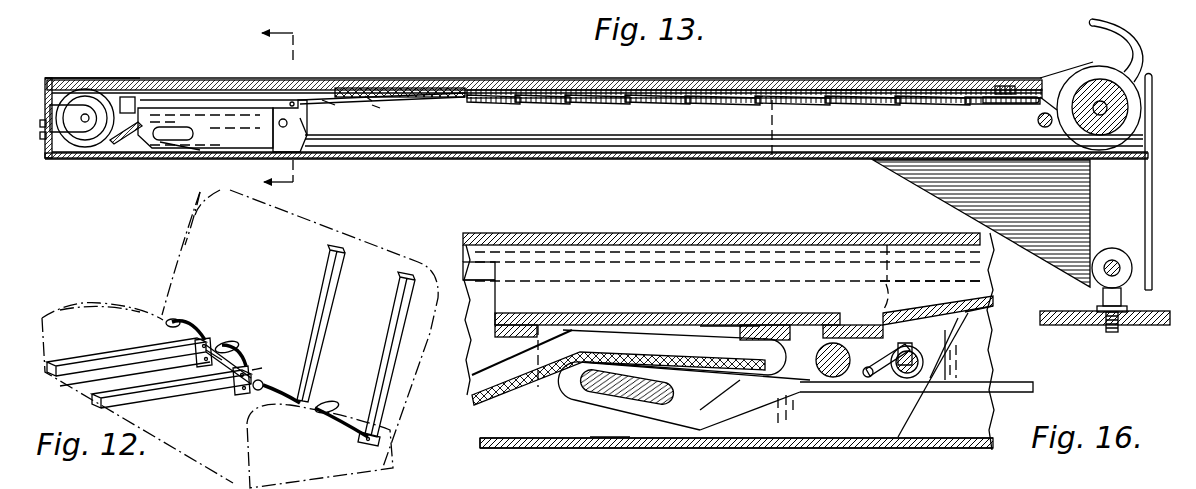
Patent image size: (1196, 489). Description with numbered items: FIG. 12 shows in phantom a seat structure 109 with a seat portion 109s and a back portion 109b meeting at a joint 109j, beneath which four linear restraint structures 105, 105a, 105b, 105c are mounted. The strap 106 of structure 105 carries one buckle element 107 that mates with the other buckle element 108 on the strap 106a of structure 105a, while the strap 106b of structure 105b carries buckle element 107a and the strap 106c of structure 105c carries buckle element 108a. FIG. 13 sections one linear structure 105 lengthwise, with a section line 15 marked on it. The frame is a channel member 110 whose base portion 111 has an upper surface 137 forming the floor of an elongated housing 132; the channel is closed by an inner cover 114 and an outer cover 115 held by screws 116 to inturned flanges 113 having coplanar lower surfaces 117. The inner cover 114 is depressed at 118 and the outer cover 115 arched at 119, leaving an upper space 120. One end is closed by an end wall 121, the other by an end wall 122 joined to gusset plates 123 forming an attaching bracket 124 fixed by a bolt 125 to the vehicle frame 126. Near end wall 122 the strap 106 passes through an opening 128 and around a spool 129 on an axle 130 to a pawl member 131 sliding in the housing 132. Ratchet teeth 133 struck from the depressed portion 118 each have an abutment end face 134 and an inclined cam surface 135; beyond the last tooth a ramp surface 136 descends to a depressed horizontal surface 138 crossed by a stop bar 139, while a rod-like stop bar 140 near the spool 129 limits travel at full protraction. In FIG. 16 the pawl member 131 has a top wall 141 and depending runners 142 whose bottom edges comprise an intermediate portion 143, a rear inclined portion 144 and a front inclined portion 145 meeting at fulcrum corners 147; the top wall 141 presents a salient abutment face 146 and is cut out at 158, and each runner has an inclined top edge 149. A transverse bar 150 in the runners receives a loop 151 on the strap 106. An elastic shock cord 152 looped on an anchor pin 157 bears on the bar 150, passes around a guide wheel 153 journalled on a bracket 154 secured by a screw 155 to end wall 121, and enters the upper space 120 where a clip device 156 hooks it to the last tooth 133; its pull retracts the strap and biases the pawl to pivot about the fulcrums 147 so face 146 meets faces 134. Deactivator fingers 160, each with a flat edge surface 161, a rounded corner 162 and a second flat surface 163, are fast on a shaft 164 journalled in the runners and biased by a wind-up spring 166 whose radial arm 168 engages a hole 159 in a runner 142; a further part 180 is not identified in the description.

In FIG. 13, the section line 15- 15 is at (292, 108).
In FIG. 13, the linear structure 105 is at (450, 68).
In FIG. 12, the linear structure 105 is at (48, 380).
In FIG. 16, the linear structure 105 is at (1033, 392).
In FIG. 12, the linear structure 105a is at (109, 406).
In FIG. 12, the linear structure 105b is at (316, 283).
In FIG. 12, the linear structure 105c is at (396, 291).
In FIG. 13, the restraining element 106 is at (1100, 30).
In FIG. 12, the restraining element 106 is at (190, 320).
In FIG. 12, the second strap 106a is at (248, 358).
In FIG. 12, the strap 106b is at (266, 393).
In FIG. 12, the strap 106c is at (345, 412).
In FIG. 12, the buckle element 107 is at (160, 327).
In FIG. 12, the buckle element 107a is at (250, 396).
In FIG. 12, the buckle element 108 is at (234, 342).
In FIG. 12, the buckle element 108a is at (329, 400).
In FIG. 12, the seat structure 109 is at (157, 277).
In FIG. 12, the back portion 109b is at (172, 246).
In FIG. 12, the seat portion 109s is at (86, 305).
In FIG. 12, the joint 109j is at (258, 368).
In FIG. 13, the channel member 110 is at (459, 161).
In FIG. 16, the channel member 110 is at (565, 449).
In FIG. 13, the base portion 111 is at (530, 158).
In FIG. 16, the base portion 111 is at (500, 449).
In FIG. 13, the horizontal flange 113 is at (330, 105).
In FIG. 16, the horizontal flange 113 is at (482, 283).
In FIG. 13, the inner cover 114 is at (365, 92).
In FIG. 16, the inner cover 114 is at (462, 263).
In FIG. 13, the outer cover 115 is at (397, 92).
In FIG. 13, the screws 116 is at (62, 78).
In FIG. 13, the lower surfaces 117 is at (369, 101).
In FIG. 16, the lower surfaces 117 is at (466, 286).
In FIG. 16, the depressed portion 118 is at (700, 313).
In FIG. 13, the arched portion 119 is at (780, 78).
In FIG. 16, the arched portion 119 is at (796, 233).
In FIG. 13, the upper space 120 is at (833, 80).
In FIG. 13, the end wall 121 is at (47, 96).
In FIG. 13, the second end wall 122 is at (1153, 126).
In FIG. 13, the gusset plates 123 is at (945, 196).
In FIG. 13, the attaching bracket 124 is at (1154, 264).
In FIG. 12, the attaching bracket 124 is at (226, 394).
In FIG. 13, the bolt 125 is at (1112, 248).
In FIG. 13, the vehicle frame 126 is at (1082, 325).
In FIG. 13, the opening 128 is at (1048, 75).
In FIG. 13, the spool 129 is at (1087, 75).
In FIG. 13, the transverse axle 130 is at (1101, 116).
In FIG. 13, the pawl member 131 is at (307, 127).
In FIG. 16, the pawl member 131 is at (962, 358).
In FIG. 13, the elongated housing 132 is at (595, 158).
In FIG. 16, the elongated housing 132 is at (993, 430).
In FIG. 13, the ratchet teeth 133 is at (432, 100).
In FIG. 13, the abutment end face 134 is at (556, 105).
In FIG. 13, the cam surface 135 is at (632, 104).
In FIG. 13, the ramp surface 136 is at (372, 110).
In FIG. 16, the ramp surface 136 is at (993, 318).
In FIG. 13, the floor 137 is at (150, 148).
In FIG. 16, the floor 137 is at (605, 440).
In FIG. 13, the depressed horizontal surface 138 is at (208, 108).
In FIG. 16, the depressed horizontal surface 138 is at (725, 325).
In FIG. 13, the stop bar 139 is at (130, 96).
In FIG. 16, the stop bar 139 is at (500, 338).
In FIG. 13, the stop bar 140 is at (1038, 121).
In FIG. 16, the top wall portion 141 is at (765, 325).
In FIG. 16, the vertical flanges 142 is at (556, 396).
In FIG. 16, the intermediate bottom edge portion 143 is at (795, 441).
In FIG. 16, the rear bottom edge portion 144 is at (572, 406).
In FIG. 16, the front bottom edge portion 145 is at (920, 422).
In FIG. 16, the abutment face 146 is at (916, 313).
In FIG. 16, the fulcrum corners 147 is at (714, 396).
In FIG. 16, the inclined top edge 149 is at (958, 354).
In FIG. 13, the transverse bar 150 is at (183, 141).
In FIG. 16, the transverse bar 150 is at (672, 389).
In FIG. 13, the loop 151 is at (172, 152).
In FIG. 16, the loop 151 is at (745, 399).
In FIG. 13, the elastic shock cord 152 is at (613, 88).
In FIG. 16, the elastic shock cord 152 is at (520, 401).
In FIG. 13, the guide wheel 153 is at (87, 147).
In FIG. 13, the bracket 154 is at (50, 113).
In FIG. 13, the screw 155 is at (42, 136).
In FIG. 13, the clip device 156 is at (1005, 86).
In FIG. 13, the anchor pin 157 is at (275, 150).
In FIG. 16, the anchor pin 157 is at (832, 378).
In FIG. 16, the cut out 158 is at (715, 338).
In FIG. 16, the hole 159 is at (866, 378).
In FIG. 13, the deactivator fingers 160 is at (300, 100).
In FIG. 16, the flat edge surface 161 is at (993, 280).
In FIG. 16, the rounded corner edge surface 162 is at (887, 245).
In FIG. 16, the second flat edge surface 163 is at (886, 301).
In FIG. 16, the transverse shaft 164 is at (907, 379).
In FIG. 16, the wind-up spring 166 is at (914, 350).
In FIG. 16, the radial arm 168 is at (885, 378).
In FIG. 16, the link 180 is at (993, 333).